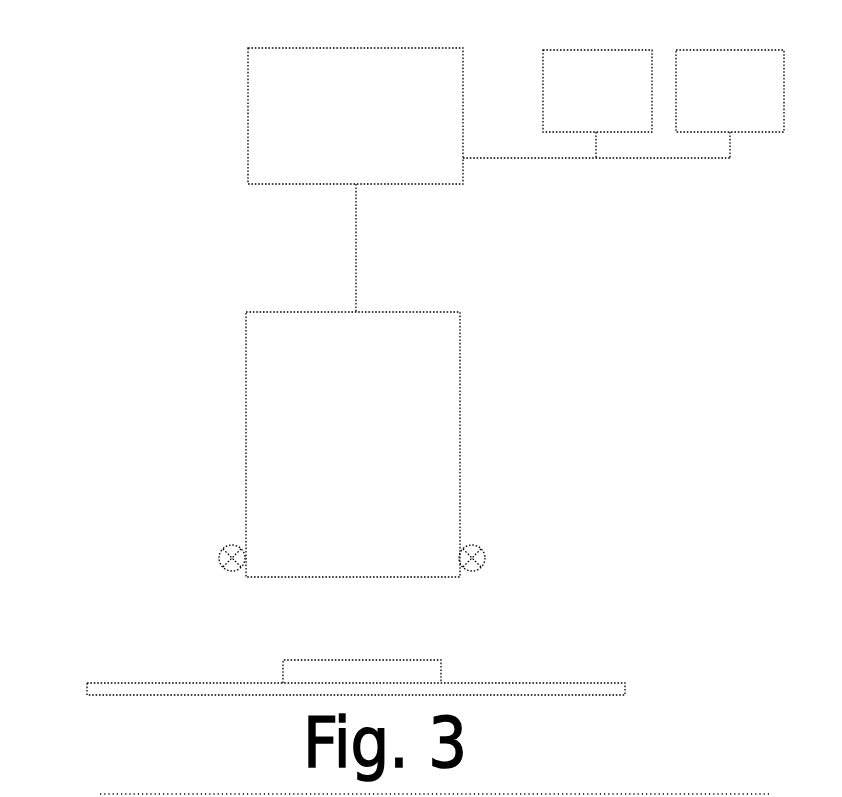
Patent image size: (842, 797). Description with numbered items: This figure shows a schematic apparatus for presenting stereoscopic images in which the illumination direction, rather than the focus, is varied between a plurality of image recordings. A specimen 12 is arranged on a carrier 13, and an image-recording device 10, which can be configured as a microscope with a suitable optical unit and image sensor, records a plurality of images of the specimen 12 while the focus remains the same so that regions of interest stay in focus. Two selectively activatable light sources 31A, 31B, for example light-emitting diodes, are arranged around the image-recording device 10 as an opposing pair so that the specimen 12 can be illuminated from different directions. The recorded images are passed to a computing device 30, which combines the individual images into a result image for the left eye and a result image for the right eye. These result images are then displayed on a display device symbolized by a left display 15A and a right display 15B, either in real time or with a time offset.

The computing device 30 is at (249, 158).
The left display 15A is at (623, 52).
The right display 15B is at (727, 52).
The image-recording device 10 is at (463, 369).
The light source 31A is at (229, 542).
The light source 31B is at (480, 547).
The specimen 12 is at (328, 656).
The carrier 13 is at (596, 683).